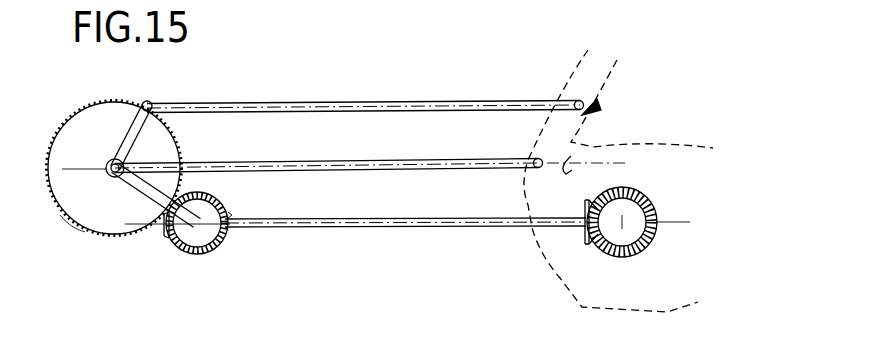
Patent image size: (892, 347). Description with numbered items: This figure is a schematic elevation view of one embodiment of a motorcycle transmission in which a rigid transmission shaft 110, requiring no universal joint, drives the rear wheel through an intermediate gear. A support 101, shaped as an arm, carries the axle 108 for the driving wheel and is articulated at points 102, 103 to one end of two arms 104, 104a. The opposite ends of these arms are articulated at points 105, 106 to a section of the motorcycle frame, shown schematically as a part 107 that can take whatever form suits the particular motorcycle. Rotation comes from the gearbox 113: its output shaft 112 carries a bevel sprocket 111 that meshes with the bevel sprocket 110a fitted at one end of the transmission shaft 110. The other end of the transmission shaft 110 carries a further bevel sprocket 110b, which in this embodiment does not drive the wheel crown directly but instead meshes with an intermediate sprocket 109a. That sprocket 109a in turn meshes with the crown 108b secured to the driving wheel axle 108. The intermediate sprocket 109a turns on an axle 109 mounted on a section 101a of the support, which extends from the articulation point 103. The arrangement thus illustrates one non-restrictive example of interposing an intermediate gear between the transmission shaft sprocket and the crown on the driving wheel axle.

The support 101 is at (128, 142).
The section of the support 101a is at (167, 262).
The articulation point 102 is at (150, 103).
The articulation point 103 is at (123, 178).
The arm 104 is at (303, 107).
The arm 104a is at (387, 167).
The articulation point 105 is at (580, 103).
The articulation point 106 is at (543, 163).
The frame part 107 is at (600, 100).
The axle 108 is at (110, 157).
The crown 108b is at (82, 210).
The axle 109 is at (213, 263).
The sprocket 109a is at (223, 250).
The transmission shaft 110 is at (385, 225).
The bevel sprocket 110a is at (583, 237).
The bevel sprocket 110b is at (232, 215).
The bevel sprocket 111 is at (650, 213).
The output shaft 112 is at (622, 222).
The gearbox 113 is at (665, 270).